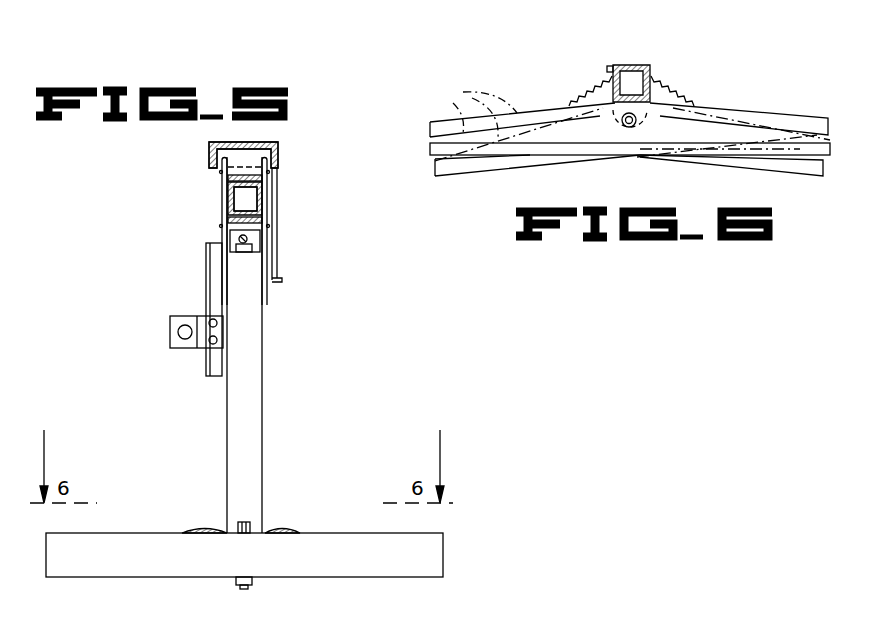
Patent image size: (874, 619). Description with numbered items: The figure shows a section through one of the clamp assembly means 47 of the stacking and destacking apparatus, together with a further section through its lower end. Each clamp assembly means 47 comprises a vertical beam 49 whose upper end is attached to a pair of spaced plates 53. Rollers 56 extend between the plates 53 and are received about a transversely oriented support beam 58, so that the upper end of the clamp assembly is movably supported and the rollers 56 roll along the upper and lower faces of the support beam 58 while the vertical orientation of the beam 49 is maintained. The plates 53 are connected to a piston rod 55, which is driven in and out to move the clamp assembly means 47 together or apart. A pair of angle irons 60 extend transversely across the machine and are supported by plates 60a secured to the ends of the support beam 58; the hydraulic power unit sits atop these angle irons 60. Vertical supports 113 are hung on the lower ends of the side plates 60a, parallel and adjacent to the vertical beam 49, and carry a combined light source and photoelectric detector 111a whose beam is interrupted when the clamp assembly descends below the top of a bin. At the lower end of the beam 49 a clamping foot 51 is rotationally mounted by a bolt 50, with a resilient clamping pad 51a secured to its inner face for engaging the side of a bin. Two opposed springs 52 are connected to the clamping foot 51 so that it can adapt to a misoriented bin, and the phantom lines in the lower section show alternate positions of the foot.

In FIG. 5, the clamp assembly means 47 is at (263, 345).
In FIG. 5, the vertical beam 49 is at (260, 388).
In FIG. 6, the vertical beam 49 is at (632, 65).
In FIG. 5, the bolt 50 is at (250, 523).
In FIG. 6, the bolt 50 is at (629, 128).
In FIG. 5, the clamping foot 51 is at (443, 533).
In FIG. 6, the clamping foot 51 is at (630, 128).
In FIG. 5, the resilient clamping pad 51a is at (425, 557).
In FIG. 6, the resilient clamping pad 51a is at (570, 147).
In FIG. 5, the springs 52 is at (214, 528).
In FIG. 6, the springs 52 is at (600, 90).
In FIG. 5, the spaced plates 53 is at (232, 184).
In FIG. 5, the piston rod 55 is at (255, 252).
In FIG. 5, the rollers 56 is at (263, 180).
In FIG. 5, the support beam 58 is at (232, 202).
In FIG. 5, the angle irons 60 is at (208, 154).
In FIG. 5, the plates 60a is at (281, 282).
In FIG. 5, the combined light source and photoelectric detector 111a is at (178, 332).
In FIG. 5, the vertical supports 113 is at (209, 284).